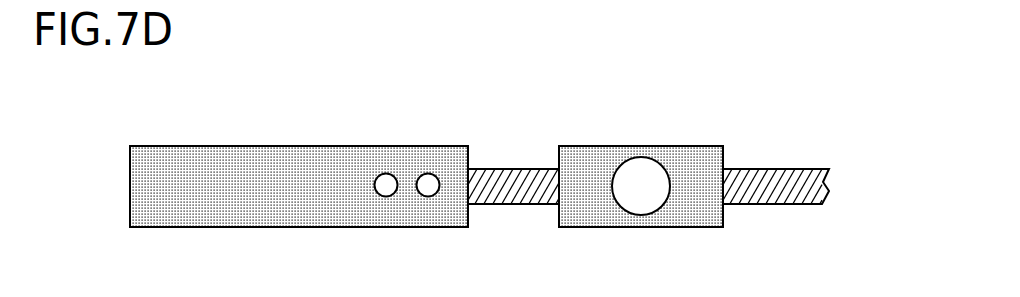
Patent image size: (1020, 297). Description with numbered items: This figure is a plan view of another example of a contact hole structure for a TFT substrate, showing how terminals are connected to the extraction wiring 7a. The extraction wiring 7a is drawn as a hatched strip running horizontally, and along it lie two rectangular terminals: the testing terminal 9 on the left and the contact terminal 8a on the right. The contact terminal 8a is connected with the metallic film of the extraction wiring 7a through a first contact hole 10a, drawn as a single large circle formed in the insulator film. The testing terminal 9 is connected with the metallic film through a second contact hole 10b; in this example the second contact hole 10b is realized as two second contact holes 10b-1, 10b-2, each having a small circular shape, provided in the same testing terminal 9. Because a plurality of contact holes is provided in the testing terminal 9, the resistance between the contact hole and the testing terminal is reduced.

The testing terminal 9 is at (151, 163).
The second contact hole 10b is at (294, 163).
The second contact hole 10b-1 is at (386, 197).
The second contact hole 10b-2 is at (428, 197).
The contact terminal 8a is at (567, 160).
The first contact hole 10a is at (661, 162).
The extraction wiring 7a is at (793, 204).